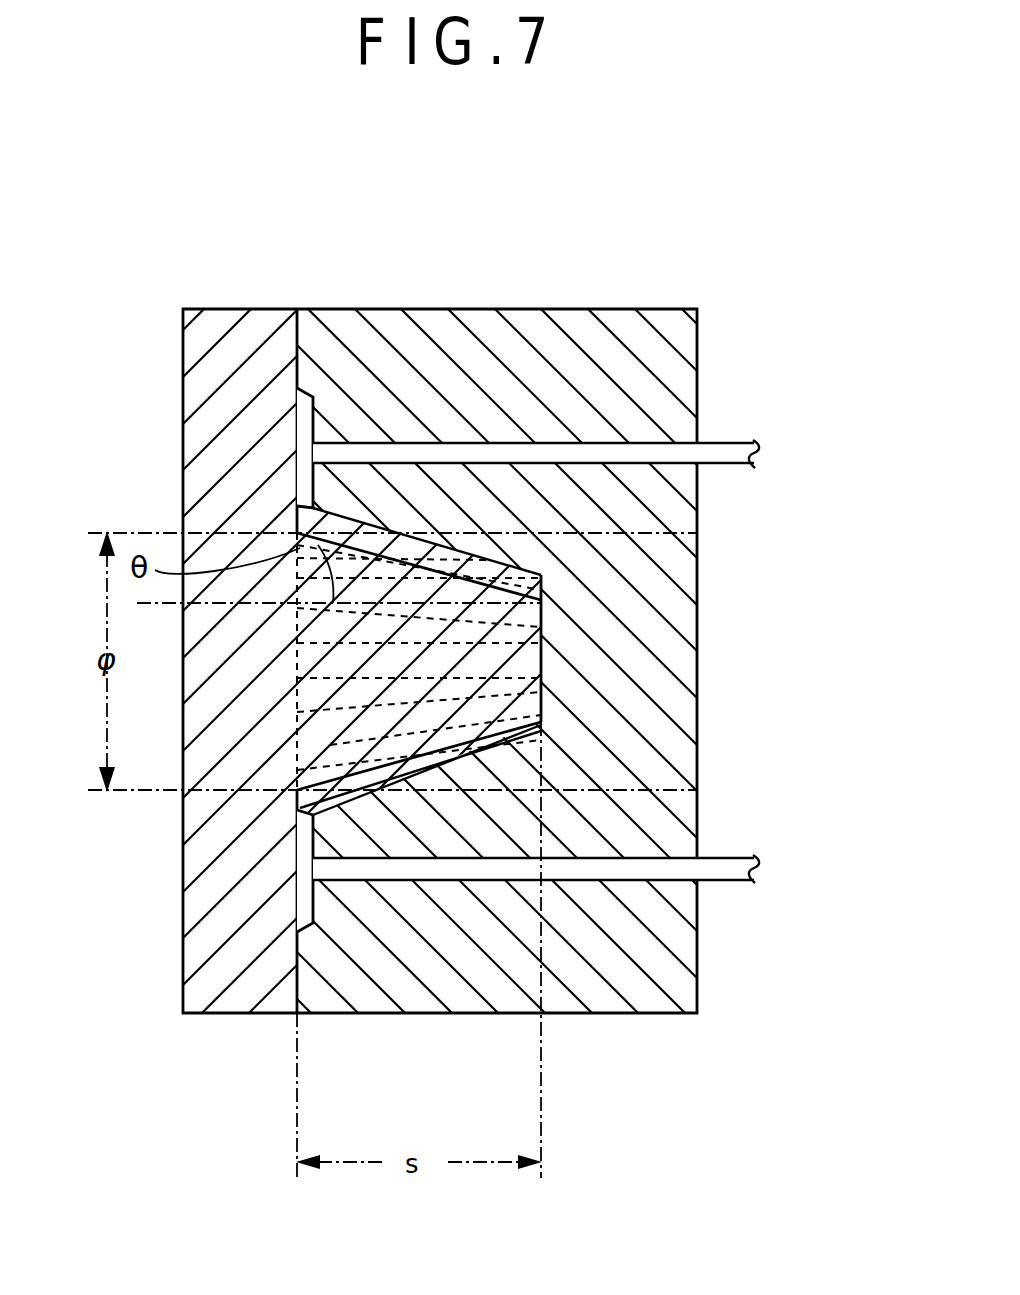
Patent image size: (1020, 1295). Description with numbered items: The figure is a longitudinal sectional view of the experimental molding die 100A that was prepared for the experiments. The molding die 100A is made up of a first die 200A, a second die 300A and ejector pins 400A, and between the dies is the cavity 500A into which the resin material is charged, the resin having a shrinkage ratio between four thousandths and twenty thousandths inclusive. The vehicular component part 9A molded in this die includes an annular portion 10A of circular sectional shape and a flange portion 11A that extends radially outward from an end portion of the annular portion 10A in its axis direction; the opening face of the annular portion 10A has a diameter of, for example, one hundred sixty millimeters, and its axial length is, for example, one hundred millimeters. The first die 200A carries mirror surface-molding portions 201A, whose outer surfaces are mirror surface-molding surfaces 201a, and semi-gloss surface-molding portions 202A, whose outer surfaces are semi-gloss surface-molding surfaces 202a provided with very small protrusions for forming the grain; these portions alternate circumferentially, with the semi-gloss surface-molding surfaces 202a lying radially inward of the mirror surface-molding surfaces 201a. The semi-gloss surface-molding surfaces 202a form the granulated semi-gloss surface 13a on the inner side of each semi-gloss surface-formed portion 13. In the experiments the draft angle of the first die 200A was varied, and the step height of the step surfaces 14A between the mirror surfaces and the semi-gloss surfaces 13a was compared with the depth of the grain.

The experimental molding die 100A is at (412, 191).
The first die 200A is at (232, 312).
The second die 300A is at (333, 312).
The ejector pins 400A is at (722, 443).
The cavity 500A is at (542, 582).
The vehicular component part 9A is at (541, 745).
The annular portion 10A is at (500, 738).
The flange portion 11A is at (300, 413).
The semi-gloss surface-formed portion 13 is at (528, 600).
The semi-gloss surface 13a is at (505, 585).
The step surfaces 14A is at (345, 590).
The mirror surface-molding portion 201A is at (541, 603).
The mirror surface-molding surface 201a is at (541, 625).
The semi-gloss surface-molding portion 202A is at (432, 578).
The semi-gloss surface-molding surface 202a is at (465, 578).